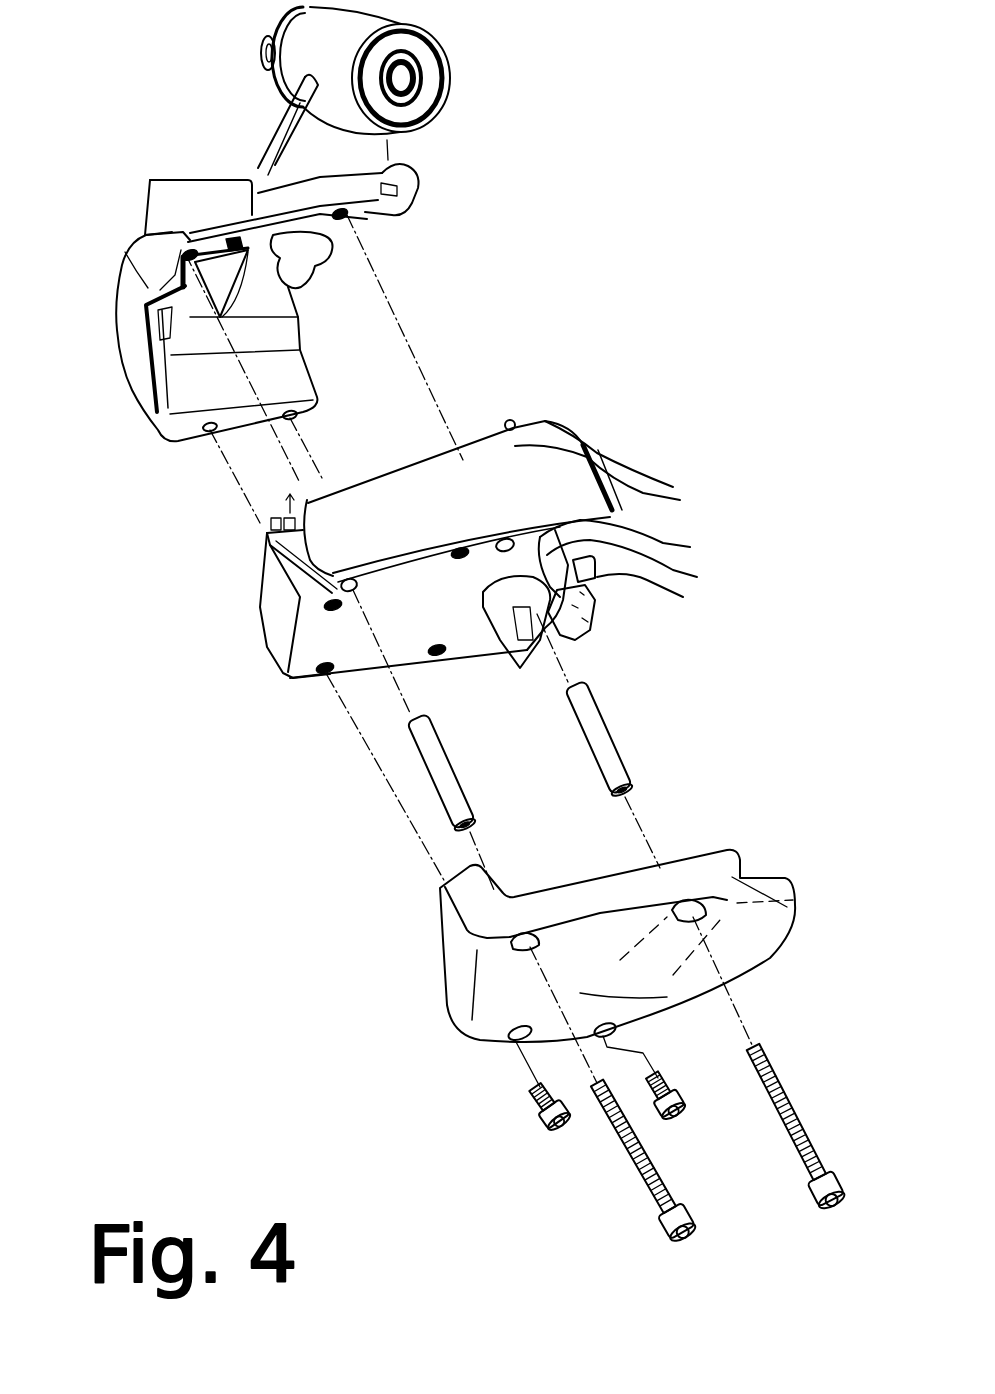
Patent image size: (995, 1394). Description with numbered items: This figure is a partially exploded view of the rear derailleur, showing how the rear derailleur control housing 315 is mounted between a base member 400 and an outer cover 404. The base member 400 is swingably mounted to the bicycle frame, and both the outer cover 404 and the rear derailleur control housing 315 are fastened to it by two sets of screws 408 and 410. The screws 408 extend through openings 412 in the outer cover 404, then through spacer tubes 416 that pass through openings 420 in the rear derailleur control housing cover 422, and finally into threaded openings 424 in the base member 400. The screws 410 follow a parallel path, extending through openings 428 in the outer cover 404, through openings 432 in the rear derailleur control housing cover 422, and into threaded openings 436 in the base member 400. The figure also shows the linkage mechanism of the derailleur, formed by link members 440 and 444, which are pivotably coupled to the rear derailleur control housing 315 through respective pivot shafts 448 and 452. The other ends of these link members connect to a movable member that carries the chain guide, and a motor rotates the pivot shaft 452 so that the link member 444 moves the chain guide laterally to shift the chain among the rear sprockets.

The base member 400 is at (293, 127).
The threaded openings 424 is at (185, 253).
The threaded openings 436 is at (300, 415).
The pivot shaft 448 is at (507, 420).
The openings 420 is at (390, 560).
The link member 440 is at (657, 512).
The link member 444 is at (597, 636).
The rear derailleur control housing 315 is at (263, 595).
The rear derailleur control housing cover 422 is at (317, 640).
The openings 432 is at (440, 657).
The pivot shaft 452 is at (507, 552).
The spacer tubes 416 is at (608, 735).
The outer cover 404 is at (460, 967).
The openings 412 is at (558, 935).
The openings 428 is at (510, 1038).
The screws 410 is at (545, 1130).
The screws 408 is at (660, 1237).